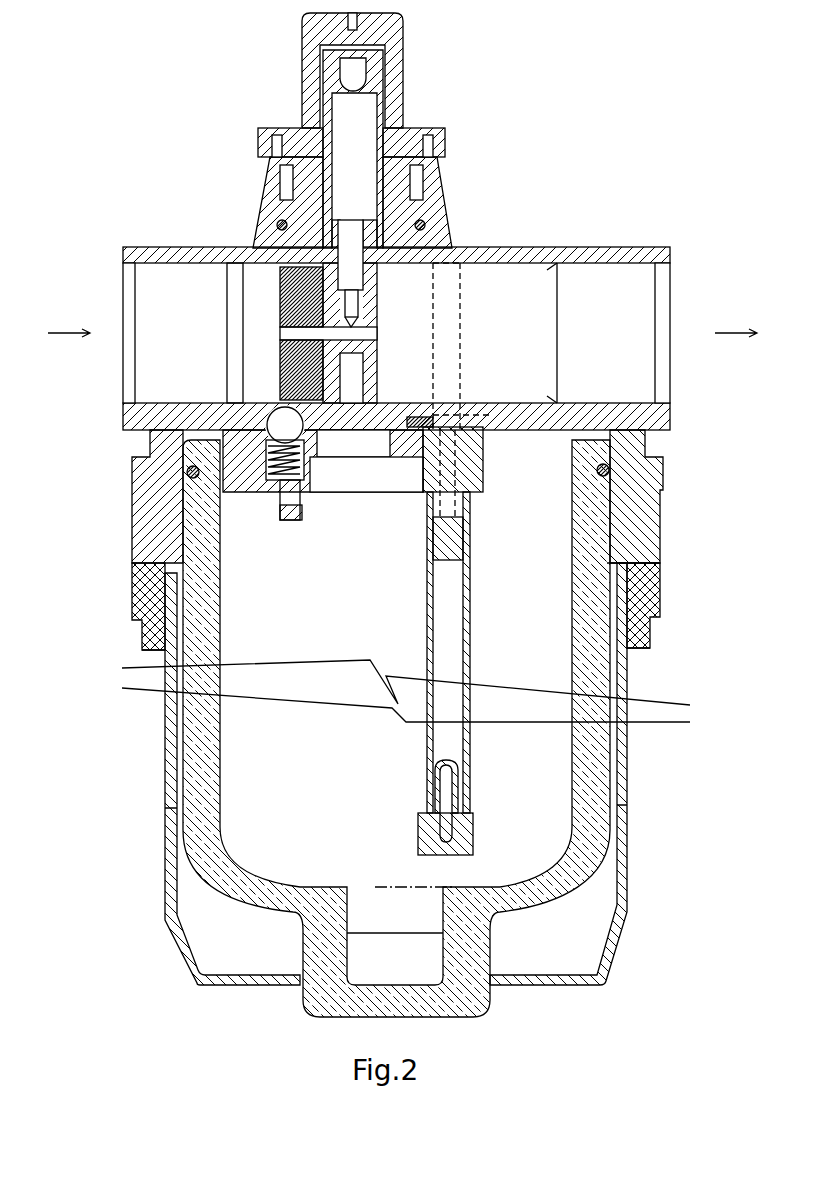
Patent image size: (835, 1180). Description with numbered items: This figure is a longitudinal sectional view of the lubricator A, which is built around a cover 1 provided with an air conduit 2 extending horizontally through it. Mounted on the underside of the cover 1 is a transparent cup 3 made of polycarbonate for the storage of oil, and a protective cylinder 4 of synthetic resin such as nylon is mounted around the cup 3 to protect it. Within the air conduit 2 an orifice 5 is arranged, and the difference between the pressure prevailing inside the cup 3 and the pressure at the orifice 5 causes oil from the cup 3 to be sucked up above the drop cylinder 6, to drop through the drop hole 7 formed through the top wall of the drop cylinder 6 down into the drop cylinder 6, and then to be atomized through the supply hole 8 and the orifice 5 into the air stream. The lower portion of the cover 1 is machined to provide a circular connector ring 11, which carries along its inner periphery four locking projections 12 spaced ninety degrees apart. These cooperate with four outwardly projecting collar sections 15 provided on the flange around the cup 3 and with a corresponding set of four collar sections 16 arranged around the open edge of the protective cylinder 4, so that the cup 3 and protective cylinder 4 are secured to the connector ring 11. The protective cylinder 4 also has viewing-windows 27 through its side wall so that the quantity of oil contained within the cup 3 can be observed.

The cover 1 is at (605, 228).
The air conduit 2 is at (500, 282).
The transparent cup 3 is at (630, 775).
The protective cylinder 4 is at (628, 883).
The orifice 5 is at (374, 330).
The drop cylinder 6 is at (407, 100).
The drop hole 7 is at (407, 68).
The supply hole 8 is at (346, 232).
The connector ring 11 is at (650, 580).
The locking projections 12 is at (138, 612).
The collar sections 15 is at (130, 528).
The collar sections 16 is at (133, 567).
The viewing-windows 27 is at (165, 810).
The lubricator A is at (605, 148).